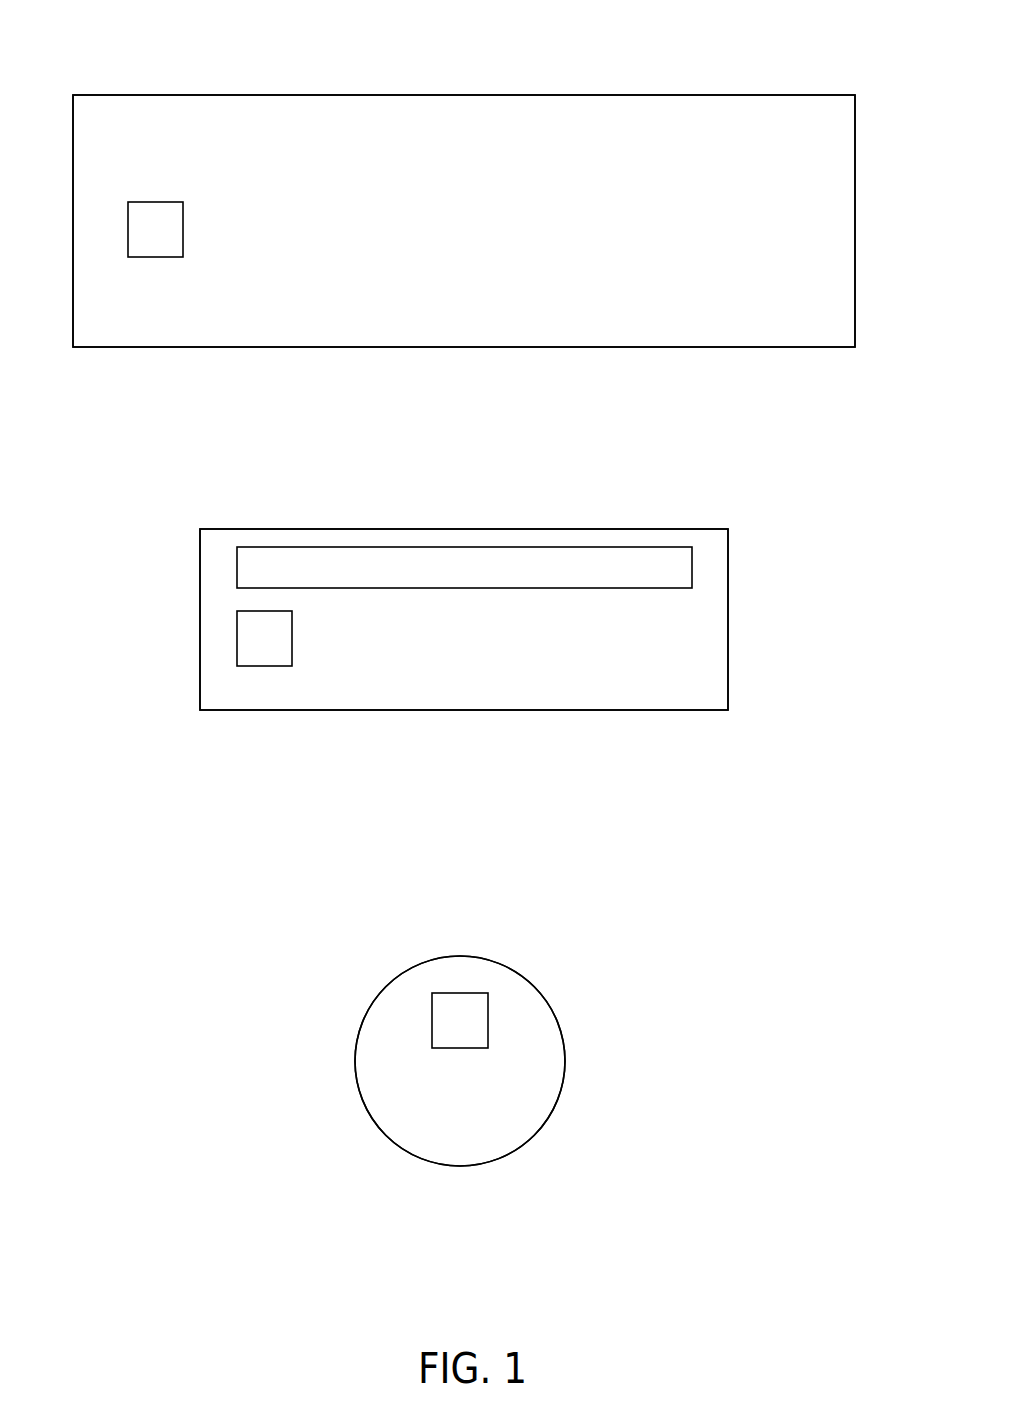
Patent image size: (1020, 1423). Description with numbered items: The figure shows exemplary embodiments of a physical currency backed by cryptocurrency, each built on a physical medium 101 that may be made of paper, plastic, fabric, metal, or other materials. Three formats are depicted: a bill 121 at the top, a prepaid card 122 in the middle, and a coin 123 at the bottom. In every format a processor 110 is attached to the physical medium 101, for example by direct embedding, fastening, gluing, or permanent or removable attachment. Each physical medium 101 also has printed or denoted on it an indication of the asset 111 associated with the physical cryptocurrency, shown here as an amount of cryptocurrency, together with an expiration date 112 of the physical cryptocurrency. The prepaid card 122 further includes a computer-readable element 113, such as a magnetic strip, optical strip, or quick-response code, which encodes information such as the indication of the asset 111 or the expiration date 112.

The physical medium 101 is at (335, 95).
The processor 110 is at (165, 202).
The indication of the asset 111 is at (428, 192).
The expiration date 112 is at (683, 210).
The computer-readable element 113 is at (638, 547).
The bill 121 is at (777, 70).
The prepaid card 122 is at (767, 510).
The coin 123 is at (595, 930).